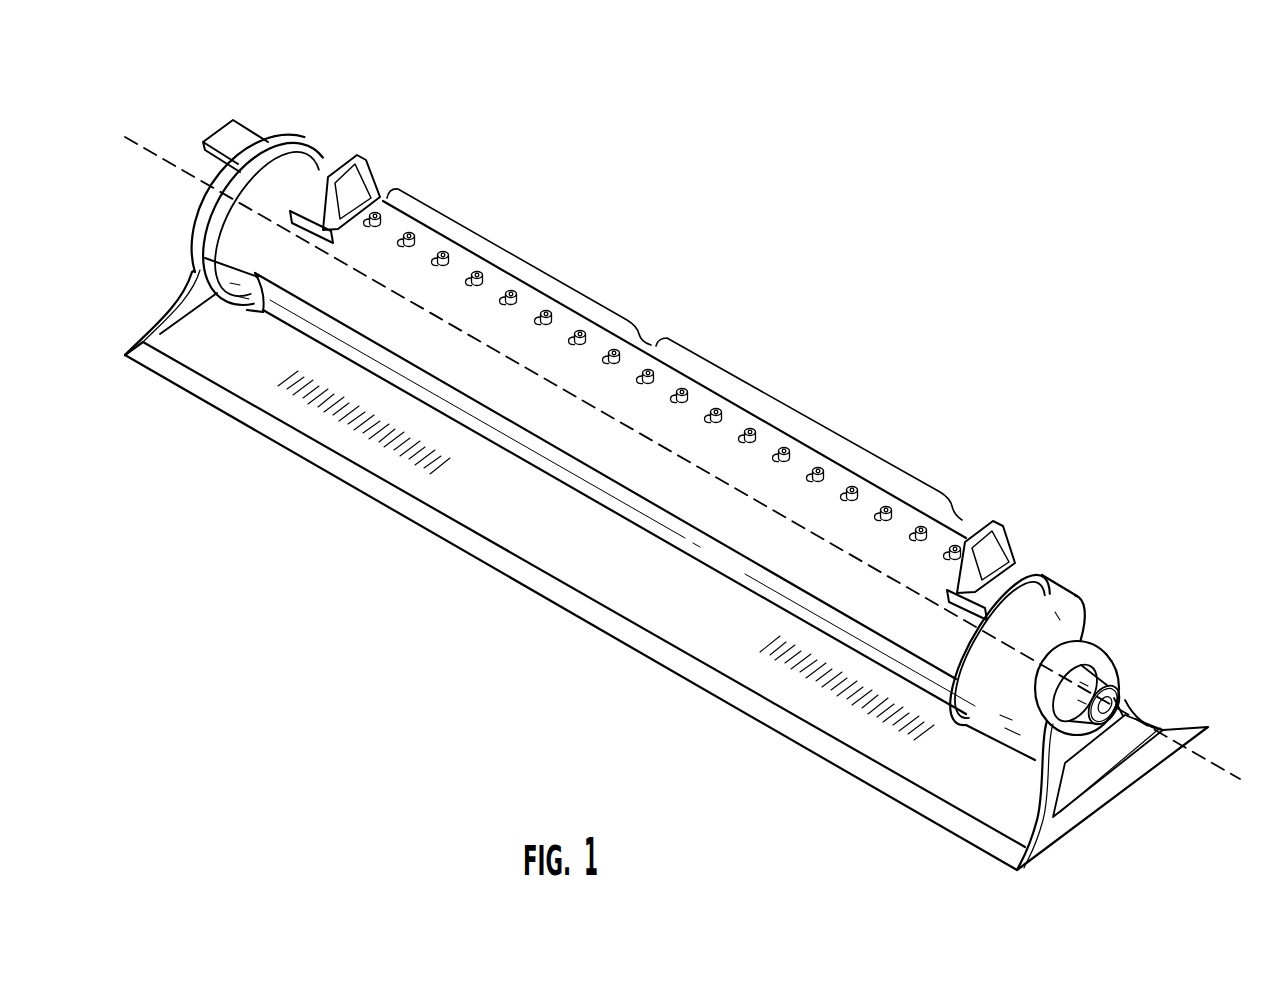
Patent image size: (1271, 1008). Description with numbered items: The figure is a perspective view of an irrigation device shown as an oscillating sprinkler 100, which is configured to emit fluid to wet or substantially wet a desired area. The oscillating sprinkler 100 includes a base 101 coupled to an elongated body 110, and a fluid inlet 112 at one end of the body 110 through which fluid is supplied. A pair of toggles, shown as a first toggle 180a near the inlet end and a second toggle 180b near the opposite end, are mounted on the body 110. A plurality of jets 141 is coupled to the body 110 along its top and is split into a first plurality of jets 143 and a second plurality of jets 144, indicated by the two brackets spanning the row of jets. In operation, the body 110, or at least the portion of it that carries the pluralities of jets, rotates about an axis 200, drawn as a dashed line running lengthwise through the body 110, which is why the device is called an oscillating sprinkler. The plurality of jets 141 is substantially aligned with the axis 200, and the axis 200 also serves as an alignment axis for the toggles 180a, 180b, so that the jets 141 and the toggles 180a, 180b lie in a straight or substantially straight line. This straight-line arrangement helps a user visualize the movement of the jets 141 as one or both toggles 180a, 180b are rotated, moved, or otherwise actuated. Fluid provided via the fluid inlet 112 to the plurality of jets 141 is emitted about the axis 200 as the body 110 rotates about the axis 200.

The oscillating sprinkler 100 is at (838, 190).
The base 101 is at (1180, 722).
The body 110 is at (448, 233).
The fluid inlet 112 is at (297, 137).
The plurality of jets 141 is at (478, 270).
The first plurality of jets 143 is at (534, 262).
The second plurality of jets 144 is at (818, 427).
The first toggle 180a is at (360, 190).
The second toggle 180b is at (995, 560).
The axis 200 is at (170, 163).